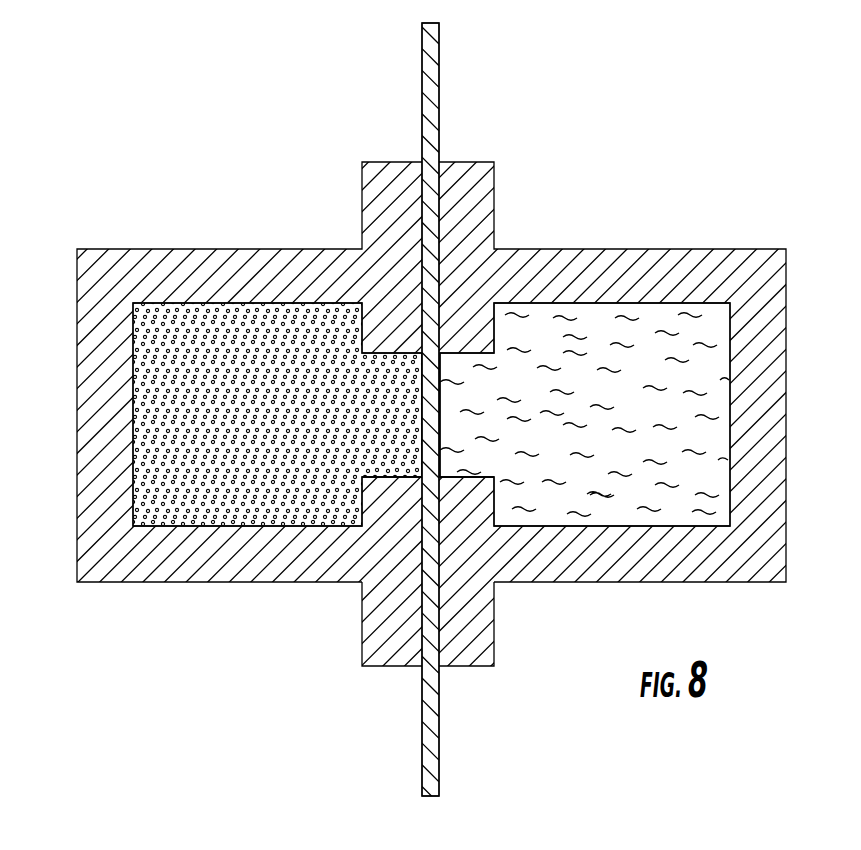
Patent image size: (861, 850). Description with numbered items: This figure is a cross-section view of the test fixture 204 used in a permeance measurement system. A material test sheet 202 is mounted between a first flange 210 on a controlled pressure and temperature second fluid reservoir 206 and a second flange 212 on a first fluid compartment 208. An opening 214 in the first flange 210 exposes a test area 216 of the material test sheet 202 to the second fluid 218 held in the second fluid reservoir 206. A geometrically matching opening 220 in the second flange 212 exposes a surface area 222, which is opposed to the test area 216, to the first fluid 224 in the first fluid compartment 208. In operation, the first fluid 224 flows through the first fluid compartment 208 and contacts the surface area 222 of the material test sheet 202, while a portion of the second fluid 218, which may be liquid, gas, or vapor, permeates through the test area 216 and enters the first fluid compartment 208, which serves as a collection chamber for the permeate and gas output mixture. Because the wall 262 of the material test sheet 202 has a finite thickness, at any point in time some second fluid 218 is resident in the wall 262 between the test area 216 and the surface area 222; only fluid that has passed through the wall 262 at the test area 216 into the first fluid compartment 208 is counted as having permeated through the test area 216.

The material test sheet 202 is at (473, 413).
The fixture 204 is at (430, 402).
The second fluid reservoir 206 is at (753, 583).
The first fluid compartment 208 is at (76, 548).
The first flange 210 is at (475, 667).
The second flange 212 is at (397, 667).
The opening 214 is at (453, 476).
The test area 216 is at (440, 396).
The second fluid 218 is at (630, 357).
The geometrically matching opening 220 is at (410, 470).
The surface area 222 is at (277, 397).
The first fluid 224 is at (207, 498).
The wall 262 is at (440, 745).